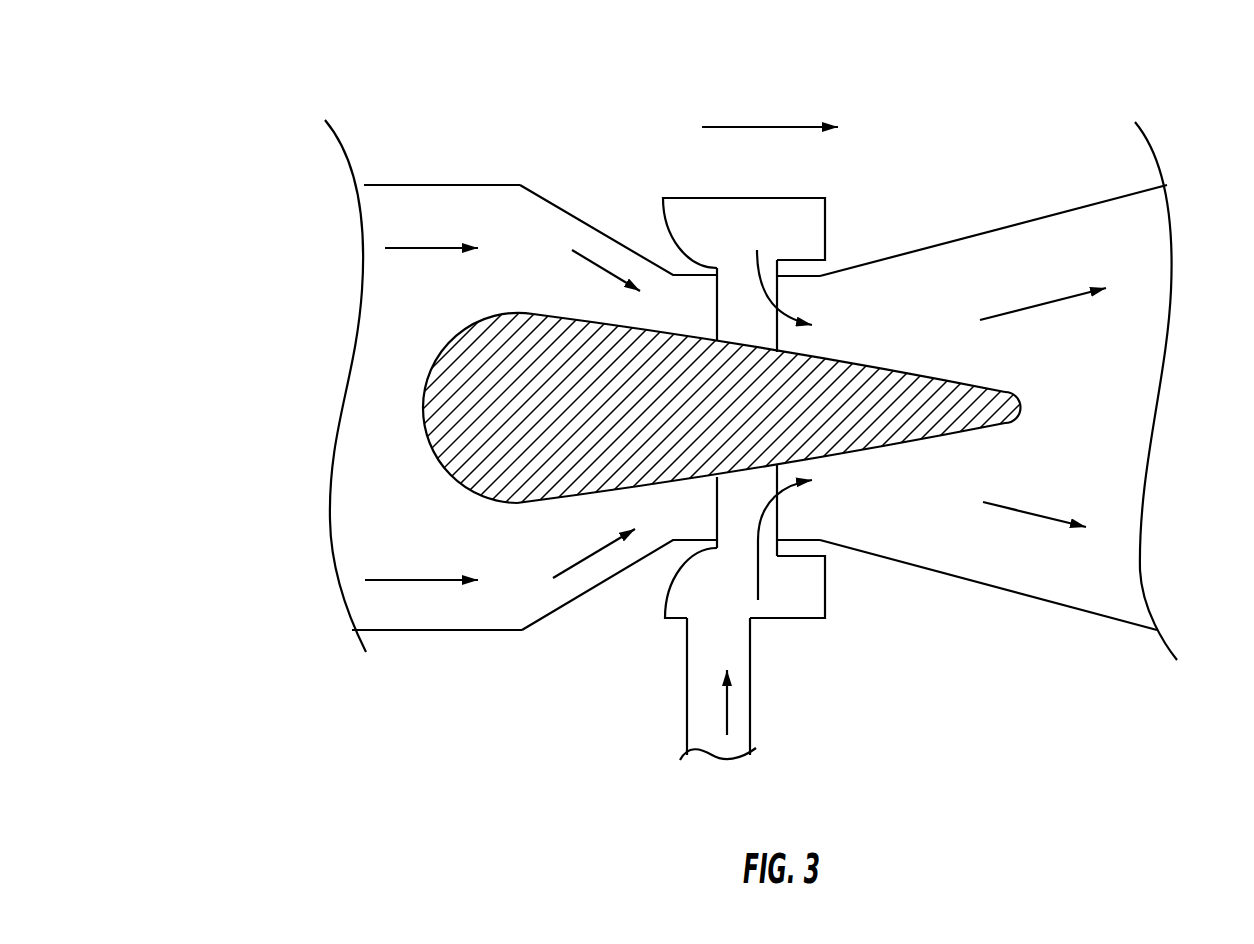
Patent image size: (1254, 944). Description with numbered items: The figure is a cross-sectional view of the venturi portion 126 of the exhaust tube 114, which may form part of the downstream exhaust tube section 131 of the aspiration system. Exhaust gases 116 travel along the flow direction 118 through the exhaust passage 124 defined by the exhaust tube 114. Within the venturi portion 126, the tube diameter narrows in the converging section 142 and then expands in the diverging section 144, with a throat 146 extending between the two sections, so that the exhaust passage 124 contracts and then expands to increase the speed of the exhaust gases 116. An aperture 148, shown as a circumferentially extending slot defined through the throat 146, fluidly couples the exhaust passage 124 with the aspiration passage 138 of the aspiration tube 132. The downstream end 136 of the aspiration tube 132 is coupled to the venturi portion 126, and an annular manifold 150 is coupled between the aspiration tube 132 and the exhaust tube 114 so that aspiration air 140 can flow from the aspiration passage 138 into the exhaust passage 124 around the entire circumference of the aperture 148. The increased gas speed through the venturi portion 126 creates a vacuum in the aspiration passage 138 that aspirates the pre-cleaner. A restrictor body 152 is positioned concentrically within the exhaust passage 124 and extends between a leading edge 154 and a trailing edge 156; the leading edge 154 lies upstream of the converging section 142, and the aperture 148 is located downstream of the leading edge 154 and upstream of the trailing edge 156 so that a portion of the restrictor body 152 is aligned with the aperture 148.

The exhaust tube 114 is at (534, 391).
The exhaust gases 116 is at (438, 247).
The flow direction 118 is at (790, 123).
The exhaust passage 124 is at (1068, 372).
The venturi portion 126 is at (238, 95).
The downstream exhaust tube section 131 is at (923, 245).
The aspiration tube 132 is at (750, 655).
The downstream end of the aspiration tube 136 is at (630, 689).
The aspiration passage 138 is at (703, 660).
The aspiration air 140 is at (757, 262).
The converging section 142 is at (583, 218).
The diverging section 144 is at (998, 390).
The throat 146 is at (802, 277).
The aperture 148 is at (730, 331).
The annular manifold 150 is at (827, 223).
The restrictor body 152 is at (436, 474).
The leading edge 154 is at (718, 410).
The trailing edge 156 is at (1023, 408).